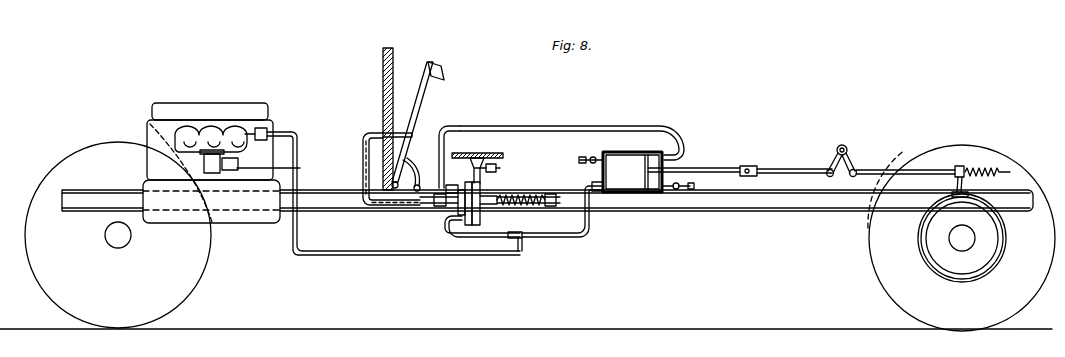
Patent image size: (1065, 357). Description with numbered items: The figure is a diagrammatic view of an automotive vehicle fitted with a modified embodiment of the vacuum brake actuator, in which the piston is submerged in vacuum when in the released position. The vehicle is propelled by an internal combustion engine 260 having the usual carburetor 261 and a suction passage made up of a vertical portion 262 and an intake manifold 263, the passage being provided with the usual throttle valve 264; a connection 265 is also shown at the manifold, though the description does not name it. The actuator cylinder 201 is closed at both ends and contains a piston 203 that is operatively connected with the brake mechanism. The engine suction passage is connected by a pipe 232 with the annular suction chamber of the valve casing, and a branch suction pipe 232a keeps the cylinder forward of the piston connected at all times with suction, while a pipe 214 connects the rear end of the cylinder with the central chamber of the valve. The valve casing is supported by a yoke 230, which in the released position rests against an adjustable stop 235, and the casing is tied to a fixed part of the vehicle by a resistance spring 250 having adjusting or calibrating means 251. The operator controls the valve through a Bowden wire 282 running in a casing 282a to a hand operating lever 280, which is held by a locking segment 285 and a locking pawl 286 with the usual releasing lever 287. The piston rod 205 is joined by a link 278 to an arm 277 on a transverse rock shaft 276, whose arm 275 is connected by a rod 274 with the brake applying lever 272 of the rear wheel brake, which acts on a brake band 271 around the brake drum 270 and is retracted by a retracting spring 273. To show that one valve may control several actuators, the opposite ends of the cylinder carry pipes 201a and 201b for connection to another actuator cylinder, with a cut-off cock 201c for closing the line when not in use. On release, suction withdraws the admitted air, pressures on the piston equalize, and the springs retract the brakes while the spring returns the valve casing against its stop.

The internal combustion engine 260 is at (187, 105).
The intake manifold 263 is at (222, 133).
The vertical portion of suction passage 262 is at (210, 160).
The throttle valve 264 is at (205, 164).
The manifold fitting 265 is at (262, 128).
The carburetor 261 is at (284, 168).
The suction pipe 232 is at (466, 256).
The hand operating lever 280 is at (423, 84).
The releasing lever 287 is at (440, 72).
The locking pawl 286 is at (418, 162).
The casing 282a is at (364, 150).
The Bowden wire 282 is at (420, 207).
The locking segment 285 is at (446, 130).
The pipe 214 is at (547, 126).
The yoke 230 is at (472, 172).
The adjustable stop 235 is at (494, 166).
The resistance spring 250 is at (508, 198).
The adjusting or calibrating means 251 is at (547, 207).
The branch suction pipe 232a is at (578, 238).
The actuator cylinder 201 is at (641, 152).
The piston 203 is at (647, 193).
The pipe 201a is at (586, 158).
The cut-off cock 201c is at (595, 157).
The pipe 201b is at (680, 190).
The piston rod 205 is at (752, 166).
The link 278 is at (800, 168).
The transverse rock shaft 276 is at (848, 146).
The arm 277 is at (828, 167).
The arm 275 is at (857, 166).
The rod 274 is at (890, 172).
The brake applying lever 272 is at (955, 168).
The retracting spring 273 is at (992, 168).
The brake band 271 is at (918, 237).
The brake drum 270 is at (934, 247).